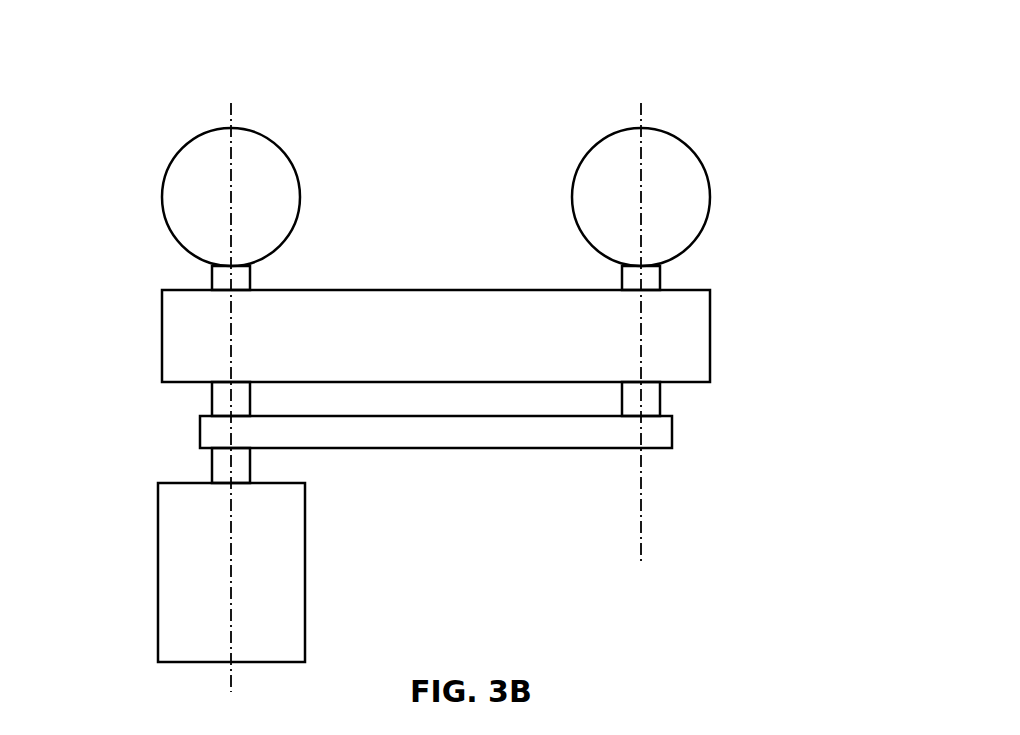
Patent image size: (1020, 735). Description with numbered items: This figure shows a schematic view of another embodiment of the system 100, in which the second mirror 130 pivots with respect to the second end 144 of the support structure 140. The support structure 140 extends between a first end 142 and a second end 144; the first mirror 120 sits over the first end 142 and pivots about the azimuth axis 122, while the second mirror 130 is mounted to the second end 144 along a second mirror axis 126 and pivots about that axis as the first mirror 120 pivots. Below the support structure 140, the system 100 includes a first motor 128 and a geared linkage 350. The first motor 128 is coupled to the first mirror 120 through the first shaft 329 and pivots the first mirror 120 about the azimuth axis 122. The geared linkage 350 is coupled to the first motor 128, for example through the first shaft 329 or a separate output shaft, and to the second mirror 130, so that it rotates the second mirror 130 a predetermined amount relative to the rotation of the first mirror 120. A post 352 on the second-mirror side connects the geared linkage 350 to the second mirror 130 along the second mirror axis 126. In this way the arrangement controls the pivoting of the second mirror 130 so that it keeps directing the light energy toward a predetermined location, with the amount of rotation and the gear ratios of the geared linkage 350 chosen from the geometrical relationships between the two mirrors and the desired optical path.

The system 100 is at (702, 17).
The first mirror 120 is at (302, 197).
The azimuth axis 122 is at (232, 110).
The second mirror axis 126 is at (642, 110).
The first motor 128 is at (158, 572).
The second mirror 130 is at (712, 197).
The support structure 140 is at (457, 290).
The first end 142 is at (150, 340).
The second end 144 is at (722, 340).
The first shaft 329 is at (212, 465).
The geared linkage 350 is at (435, 448).
The post 352 is at (660, 398).